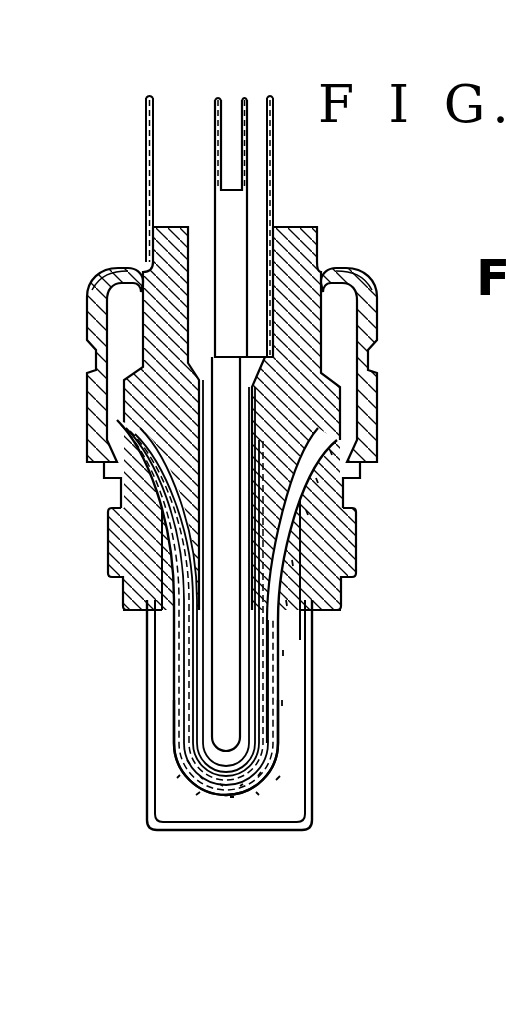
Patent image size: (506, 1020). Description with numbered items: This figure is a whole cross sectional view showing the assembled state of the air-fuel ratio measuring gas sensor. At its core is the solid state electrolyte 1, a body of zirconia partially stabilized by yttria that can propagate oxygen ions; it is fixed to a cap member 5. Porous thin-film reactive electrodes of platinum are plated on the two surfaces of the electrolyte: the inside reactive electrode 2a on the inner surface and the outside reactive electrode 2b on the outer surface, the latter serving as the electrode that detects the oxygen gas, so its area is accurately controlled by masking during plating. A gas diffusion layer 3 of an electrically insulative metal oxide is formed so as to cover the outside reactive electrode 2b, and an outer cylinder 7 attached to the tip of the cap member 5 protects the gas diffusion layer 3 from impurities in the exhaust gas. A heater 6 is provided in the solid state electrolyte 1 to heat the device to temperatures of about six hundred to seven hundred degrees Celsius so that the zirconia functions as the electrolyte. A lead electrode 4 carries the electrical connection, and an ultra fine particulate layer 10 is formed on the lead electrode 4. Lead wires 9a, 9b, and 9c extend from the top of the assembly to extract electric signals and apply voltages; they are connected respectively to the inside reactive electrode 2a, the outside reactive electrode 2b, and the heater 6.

The solid state electrolyte 1 is at (297, 316).
The inside reactive electrode 2a is at (180, 660).
The outside reactive electrode 2b is at (268, 700).
The gas diffusion layer 3 is at (186, 745).
The lead electrode 4 is at (124, 481).
The cap member 5 is at (340, 532).
The heater 6 is at (228, 319).
The outer cylinder 7 is at (310, 797).
The lead wire 9a is at (270, 97).
The lead wire 9b is at (150, 97).
The lead wire 9c is at (244, 97).
The ultra fine particulate layer 10 is at (163, 540).